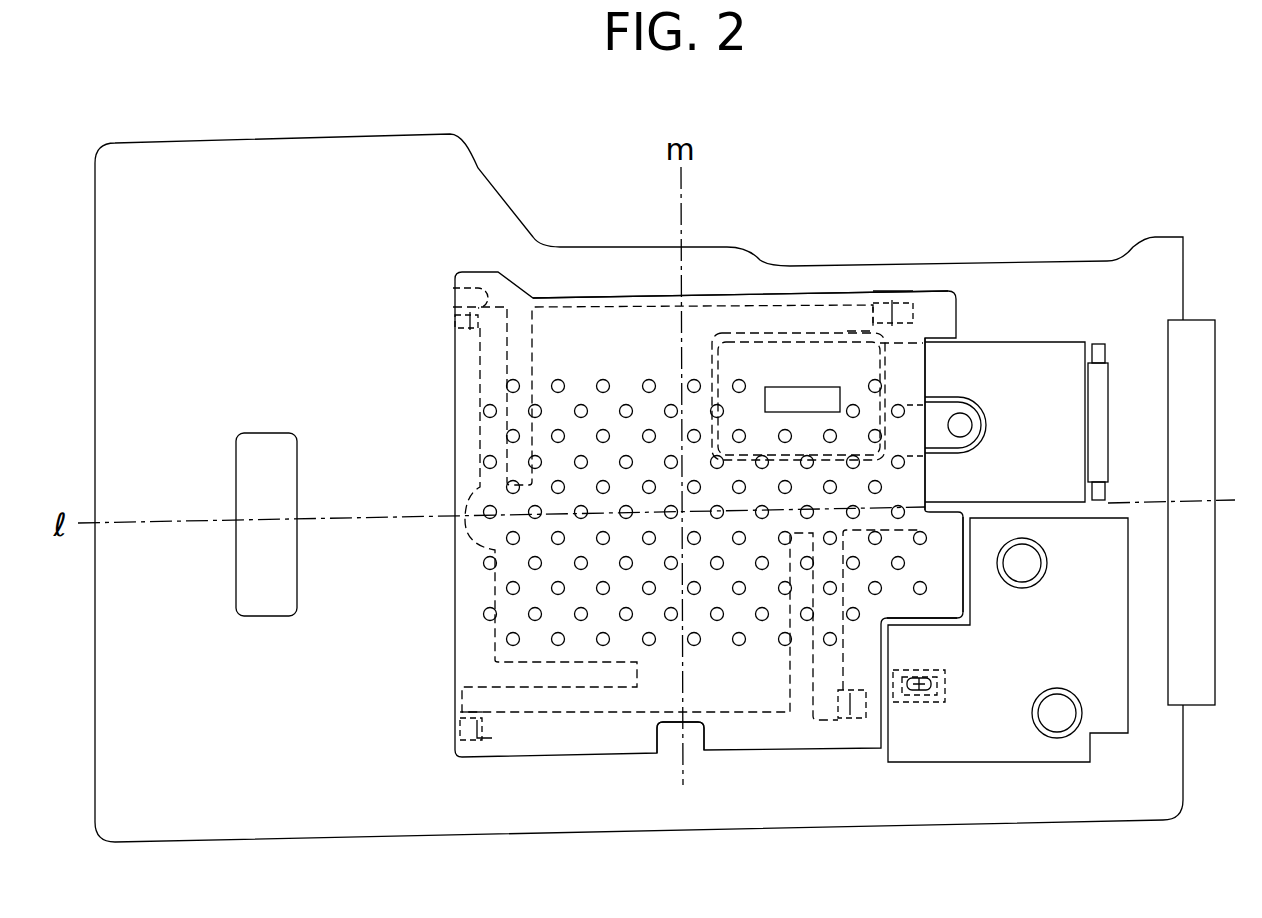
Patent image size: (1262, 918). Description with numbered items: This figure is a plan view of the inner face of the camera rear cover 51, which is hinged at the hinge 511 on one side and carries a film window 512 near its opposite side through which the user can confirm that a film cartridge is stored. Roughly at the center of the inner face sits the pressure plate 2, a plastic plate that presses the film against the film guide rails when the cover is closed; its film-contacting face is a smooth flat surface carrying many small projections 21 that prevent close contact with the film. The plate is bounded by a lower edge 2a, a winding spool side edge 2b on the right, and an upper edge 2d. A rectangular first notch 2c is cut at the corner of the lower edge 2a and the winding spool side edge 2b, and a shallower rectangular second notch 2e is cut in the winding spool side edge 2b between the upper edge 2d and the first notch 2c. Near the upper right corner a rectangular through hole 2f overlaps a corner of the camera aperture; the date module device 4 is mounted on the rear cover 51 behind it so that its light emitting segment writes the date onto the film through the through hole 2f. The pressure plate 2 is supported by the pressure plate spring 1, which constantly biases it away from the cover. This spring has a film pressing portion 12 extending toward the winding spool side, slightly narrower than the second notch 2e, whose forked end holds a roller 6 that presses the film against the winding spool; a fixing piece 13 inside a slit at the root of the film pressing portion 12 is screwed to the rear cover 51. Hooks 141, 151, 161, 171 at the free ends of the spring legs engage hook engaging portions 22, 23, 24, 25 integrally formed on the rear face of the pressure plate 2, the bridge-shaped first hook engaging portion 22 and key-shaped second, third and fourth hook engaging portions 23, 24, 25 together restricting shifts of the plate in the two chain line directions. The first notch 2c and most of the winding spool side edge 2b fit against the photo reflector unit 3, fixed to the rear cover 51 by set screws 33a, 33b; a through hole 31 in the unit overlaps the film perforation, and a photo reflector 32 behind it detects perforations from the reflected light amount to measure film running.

The pressure plate spring 1 is at (558, 305).
The pressure plate 2 is at (607, 296).
The lower edge 2a is at (718, 752).
The winding spool side edge 2b is at (968, 565).
The first notch 2c is at (945, 620).
The upper edge 2d is at (770, 292).
The second notch 2e is at (925, 380).
The through hole 2f is at (805, 412).
The photo reflector unit 3 is at (1022, 762).
The date module device 4 is at (845, 337).
The roller 6 is at (1102, 408).
The film pressing portion 12 is at (1045, 365).
The fixing piece 13 is at (985, 430).
The small projections 21 is at (490, 618).
The first hook engaging portion 22 is at (902, 290).
The second hook engaging portion 23 is at (455, 292).
The third hook engaging portion 24 is at (493, 735).
The fourth hook engaging portion 25 is at (845, 720).
The through hole 31 is at (920, 690).
The photo reflector 32 is at (900, 706).
The set screw 33a is at (1046, 552).
The set screw 33b is at (1058, 688).
The rear cover 51 is at (1035, 262).
The first hook 141 is at (918, 315).
The second hook 151 is at (455, 322).
The third hook 161 is at (473, 742).
The fourth hook 171 is at (895, 665).
The hinge 511 is at (1195, 320).
The film window 512 is at (257, 433).